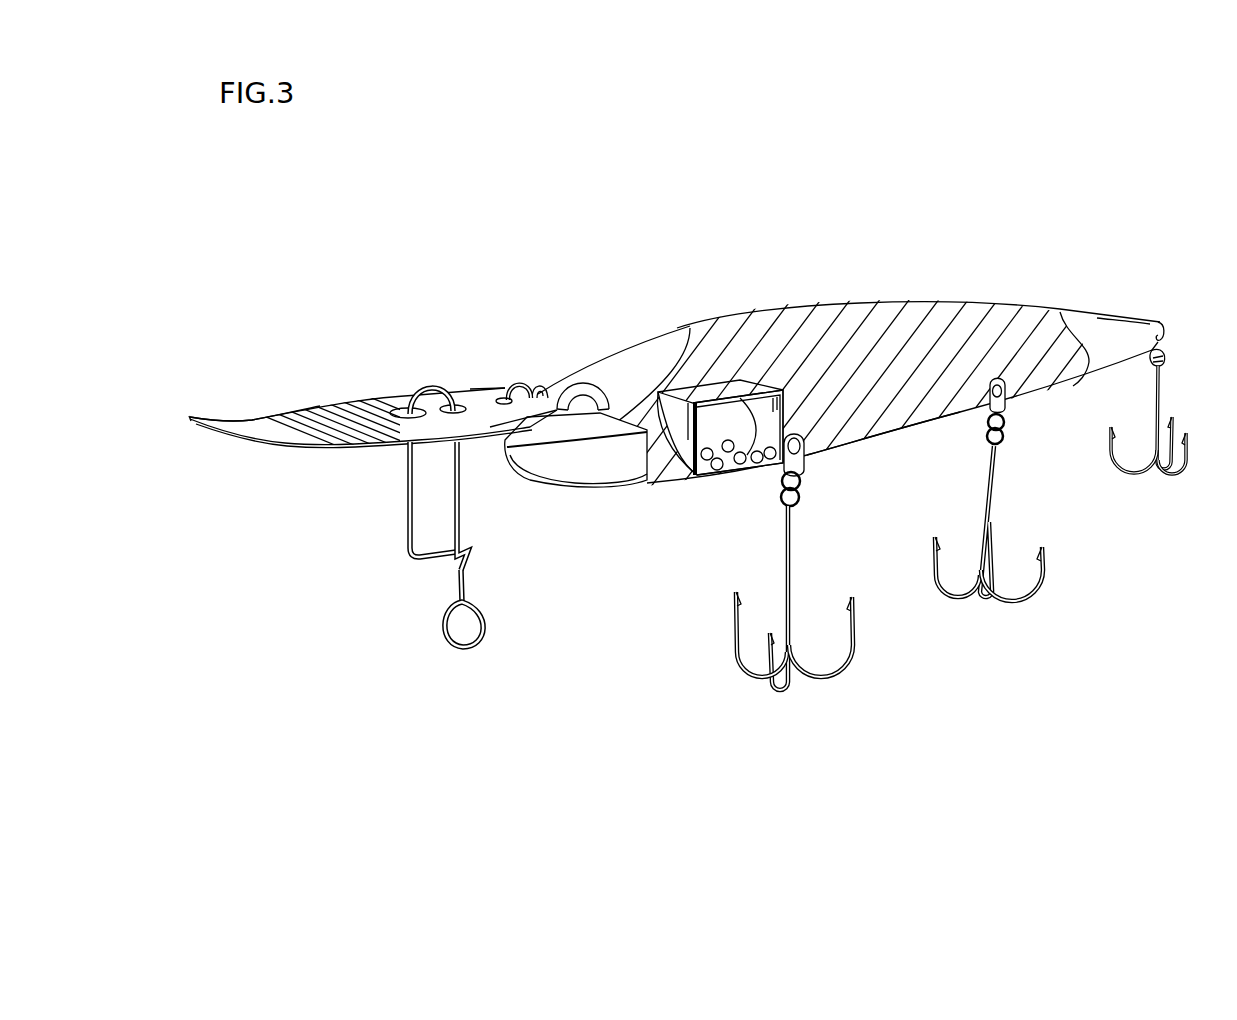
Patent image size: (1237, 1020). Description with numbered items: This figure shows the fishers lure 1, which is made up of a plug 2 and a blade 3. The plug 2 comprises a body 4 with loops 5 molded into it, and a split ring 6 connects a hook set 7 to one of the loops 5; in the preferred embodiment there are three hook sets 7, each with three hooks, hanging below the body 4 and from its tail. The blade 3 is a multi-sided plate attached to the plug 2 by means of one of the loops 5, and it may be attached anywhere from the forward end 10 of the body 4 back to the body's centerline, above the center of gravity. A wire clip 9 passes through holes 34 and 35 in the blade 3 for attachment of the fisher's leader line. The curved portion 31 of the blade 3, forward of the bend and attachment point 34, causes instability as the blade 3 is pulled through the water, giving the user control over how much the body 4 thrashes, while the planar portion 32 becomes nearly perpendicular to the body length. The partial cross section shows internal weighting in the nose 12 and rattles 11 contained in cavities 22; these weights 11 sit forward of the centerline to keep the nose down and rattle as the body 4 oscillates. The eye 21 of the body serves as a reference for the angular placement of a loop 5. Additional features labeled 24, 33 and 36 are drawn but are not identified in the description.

The fishers lure 1 is at (940, 290).
The plug 2 is at (817, 320).
The blade 3 is at (320, 446).
The body 4 is at (870, 440).
The loops 5 is at (512, 388).
The split ring 6 is at (798, 487).
The hook set 7 is at (823, 680).
The wire clip 9 is at (475, 640).
The forward end 10 is at (600, 385).
The rattles 11 is at (722, 470).
The nose 12 is at (570, 465).
The eye 21 is at (532, 384).
The cavities 22 is at (686, 445).
The tail eyelet 24 is at (1160, 321).
The curved portion 31 is at (242, 415).
The planar portion 32 is at (470, 418).
The plate tip 33 is at (193, 423).
The hole 34 is at (395, 420).
The hole 35 is at (457, 405).
The plate hole 36 is at (503, 393).